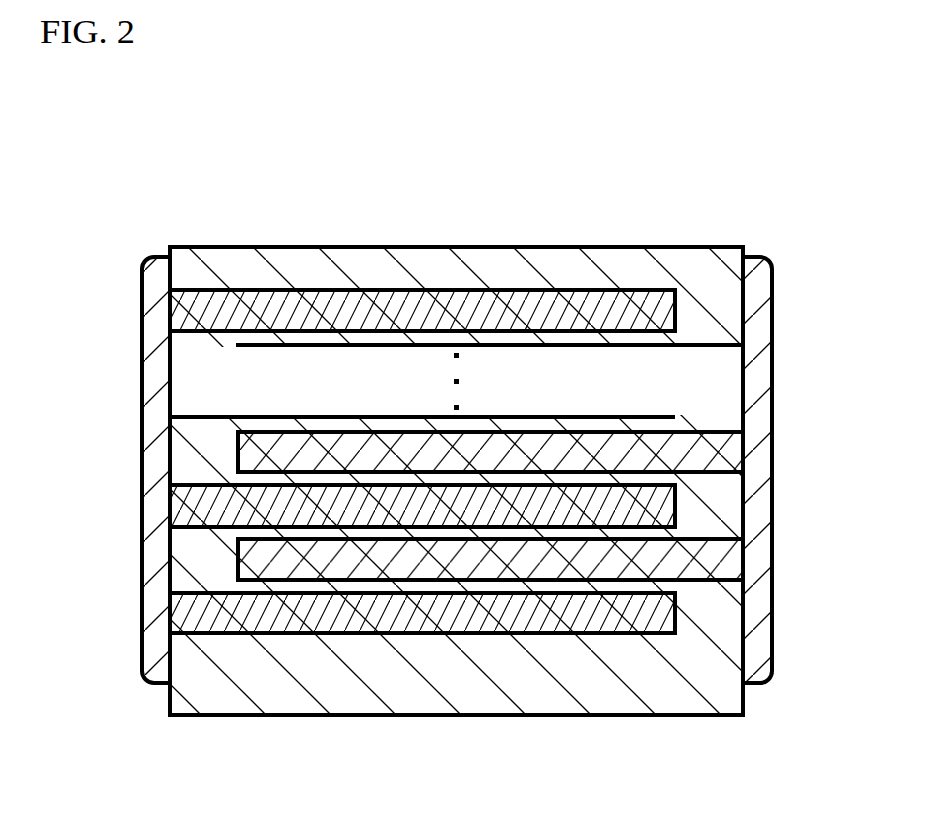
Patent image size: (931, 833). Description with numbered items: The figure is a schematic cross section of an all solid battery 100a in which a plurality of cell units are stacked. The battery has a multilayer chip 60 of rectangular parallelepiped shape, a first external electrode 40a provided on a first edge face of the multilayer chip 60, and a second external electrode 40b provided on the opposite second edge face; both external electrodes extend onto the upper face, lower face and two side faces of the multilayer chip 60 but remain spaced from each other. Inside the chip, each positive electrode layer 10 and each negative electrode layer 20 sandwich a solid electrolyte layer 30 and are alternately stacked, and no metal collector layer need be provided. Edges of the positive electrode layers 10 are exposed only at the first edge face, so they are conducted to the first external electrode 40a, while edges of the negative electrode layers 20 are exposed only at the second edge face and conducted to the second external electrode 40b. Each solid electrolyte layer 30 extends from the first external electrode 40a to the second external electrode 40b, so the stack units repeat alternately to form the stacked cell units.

The all solid battery 100a is at (882, 117).
The multilayer chip 60 is at (569, 232).
The positive electrode layer 10 is at (180, 505).
The negative electrode layer 20 is at (735, 455).
The solid electrolyte layer 30 is at (345, 588).
The first external electrode 40a is at (141, 322).
The second external electrode 40b is at (774, 322).